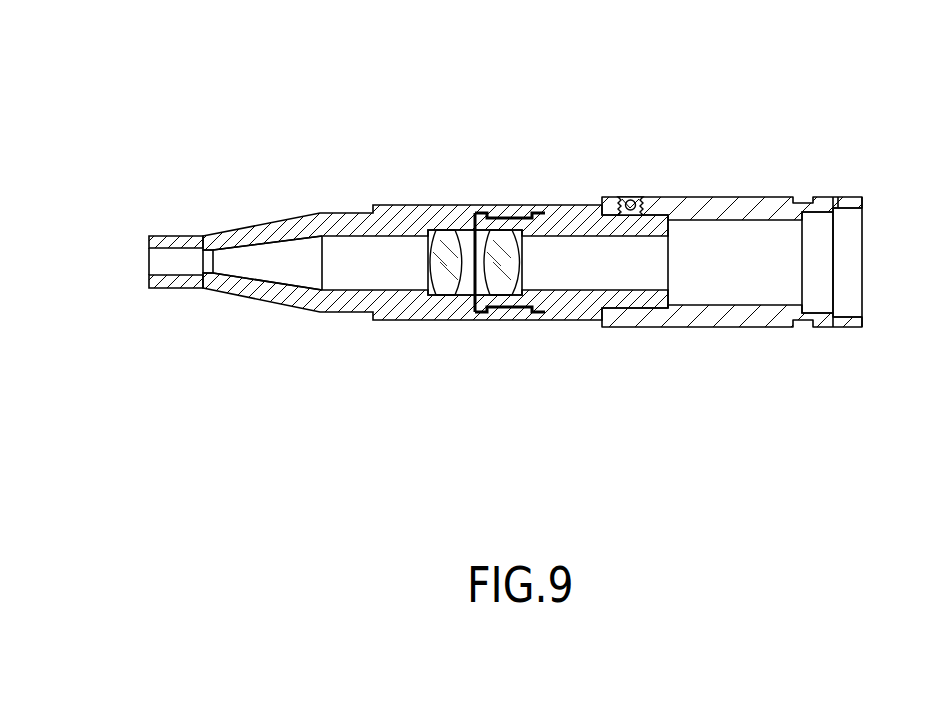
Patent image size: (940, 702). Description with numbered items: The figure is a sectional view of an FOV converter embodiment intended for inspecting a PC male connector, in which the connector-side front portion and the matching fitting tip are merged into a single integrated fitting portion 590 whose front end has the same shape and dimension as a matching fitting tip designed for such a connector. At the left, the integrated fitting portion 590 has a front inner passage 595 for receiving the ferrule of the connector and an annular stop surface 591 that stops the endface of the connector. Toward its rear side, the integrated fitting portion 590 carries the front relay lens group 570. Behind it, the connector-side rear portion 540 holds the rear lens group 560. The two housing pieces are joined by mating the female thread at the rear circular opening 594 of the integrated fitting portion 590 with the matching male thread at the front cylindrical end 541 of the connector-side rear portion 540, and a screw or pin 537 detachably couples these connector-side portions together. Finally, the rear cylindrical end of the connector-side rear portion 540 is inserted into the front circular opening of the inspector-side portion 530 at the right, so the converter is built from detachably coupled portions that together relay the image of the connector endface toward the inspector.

The inspector-side portion 530 is at (757, 197).
The screw or pin 537 is at (632, 197).
The connector-side rear portion 540 is at (558, 205).
The front cylindrical end 541 is at (530, 323).
The rear lens group 560 is at (497, 243).
The front relay lens group 570 is at (450, 232).
The integrated fitting portion 590 is at (355, 243).
The annular stop surface 591 is at (200, 263).
The rear circular opening 594 is at (508, 318).
The front inner passage 595 is at (167, 262).